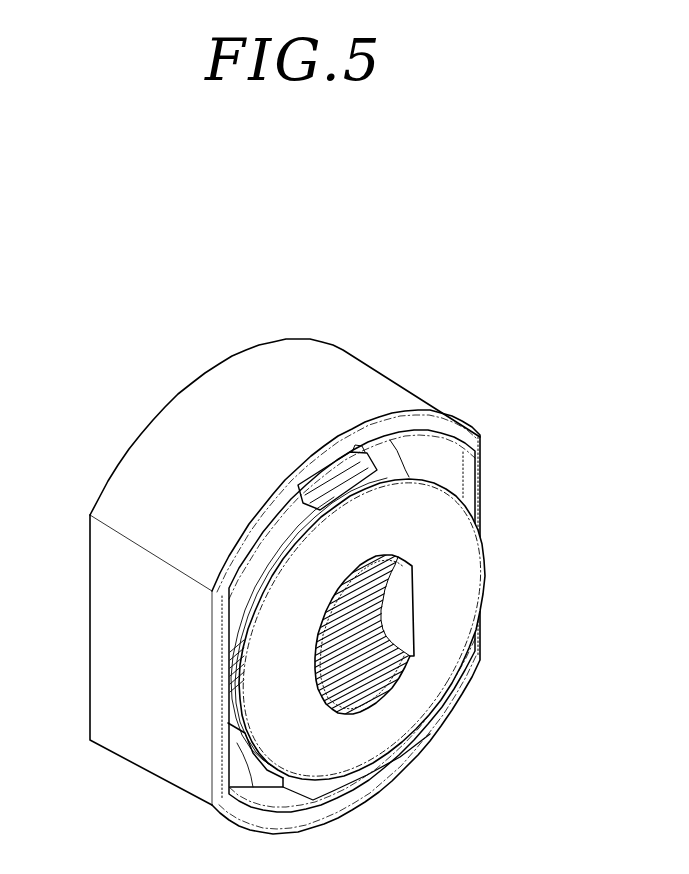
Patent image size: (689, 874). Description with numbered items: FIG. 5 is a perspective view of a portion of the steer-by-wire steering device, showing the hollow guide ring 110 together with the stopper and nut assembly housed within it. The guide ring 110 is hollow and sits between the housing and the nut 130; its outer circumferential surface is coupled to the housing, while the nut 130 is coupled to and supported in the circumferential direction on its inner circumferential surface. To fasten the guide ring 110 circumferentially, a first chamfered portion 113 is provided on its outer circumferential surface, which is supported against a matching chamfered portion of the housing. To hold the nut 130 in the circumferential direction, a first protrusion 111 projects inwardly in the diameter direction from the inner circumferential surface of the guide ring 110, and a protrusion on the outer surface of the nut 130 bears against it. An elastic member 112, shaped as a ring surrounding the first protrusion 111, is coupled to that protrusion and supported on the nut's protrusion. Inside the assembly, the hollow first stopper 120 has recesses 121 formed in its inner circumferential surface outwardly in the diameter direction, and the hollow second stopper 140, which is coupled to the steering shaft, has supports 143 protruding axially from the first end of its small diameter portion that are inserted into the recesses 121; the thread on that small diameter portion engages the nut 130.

The guide ring 110 is at (231, 407).
The first protrusion 111 is at (462, 455).
The elastic member 112 is at (343, 465).
The first chamfered portion 113 is at (112, 640).
The first stopper 120 is at (467, 592).
The recesses 121 is at (393, 690).
The nut 130 is at (257, 563).
The second stopper 140 is at (395, 625).
The supports 143 is at (357, 705).